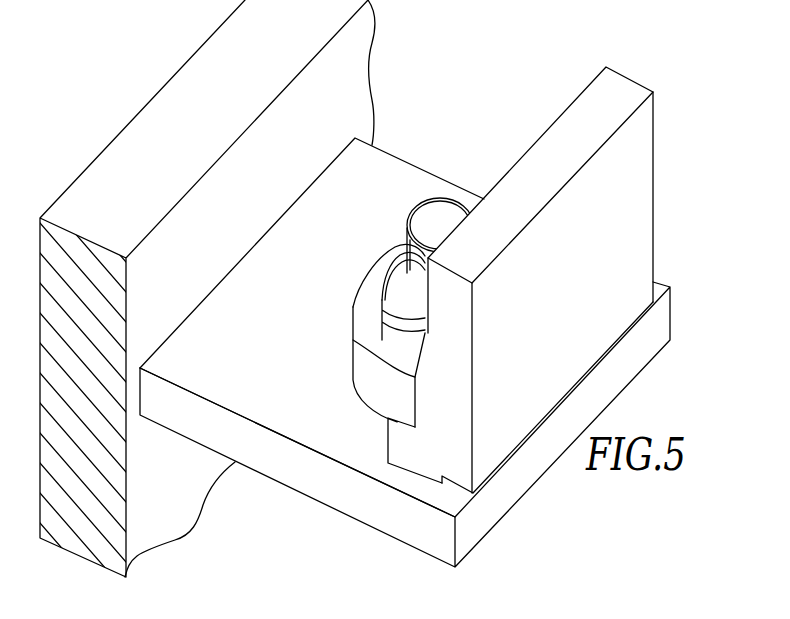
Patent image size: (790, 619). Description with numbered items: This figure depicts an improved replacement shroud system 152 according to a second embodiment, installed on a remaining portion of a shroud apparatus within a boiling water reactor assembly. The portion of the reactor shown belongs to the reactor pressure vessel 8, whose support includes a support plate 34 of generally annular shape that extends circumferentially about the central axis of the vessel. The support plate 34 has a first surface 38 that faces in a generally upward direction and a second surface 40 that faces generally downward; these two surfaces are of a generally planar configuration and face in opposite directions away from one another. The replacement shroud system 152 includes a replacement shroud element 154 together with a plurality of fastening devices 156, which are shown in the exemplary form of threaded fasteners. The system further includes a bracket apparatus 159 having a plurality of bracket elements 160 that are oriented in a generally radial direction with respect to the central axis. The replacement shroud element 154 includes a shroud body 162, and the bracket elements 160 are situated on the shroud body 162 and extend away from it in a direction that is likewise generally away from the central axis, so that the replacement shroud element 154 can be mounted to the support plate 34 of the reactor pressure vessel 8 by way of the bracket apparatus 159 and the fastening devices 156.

The reactor pressure vessel 8 is at (162, 493).
The support plate 34 is at (405, 360).
The first surface 38 is at (293, 434).
The second surface 40 is at (333, 508).
The replacement shroud system 152 is at (572, 262).
The replacement shroud element 154 is at (655, 192).
The fastening devices 156 is at (438, 214).
The bracket apparatus 159 is at (347, 418).
The bracket elements 160 is at (357, 360).
The shroud body 162 is at (633, 247).